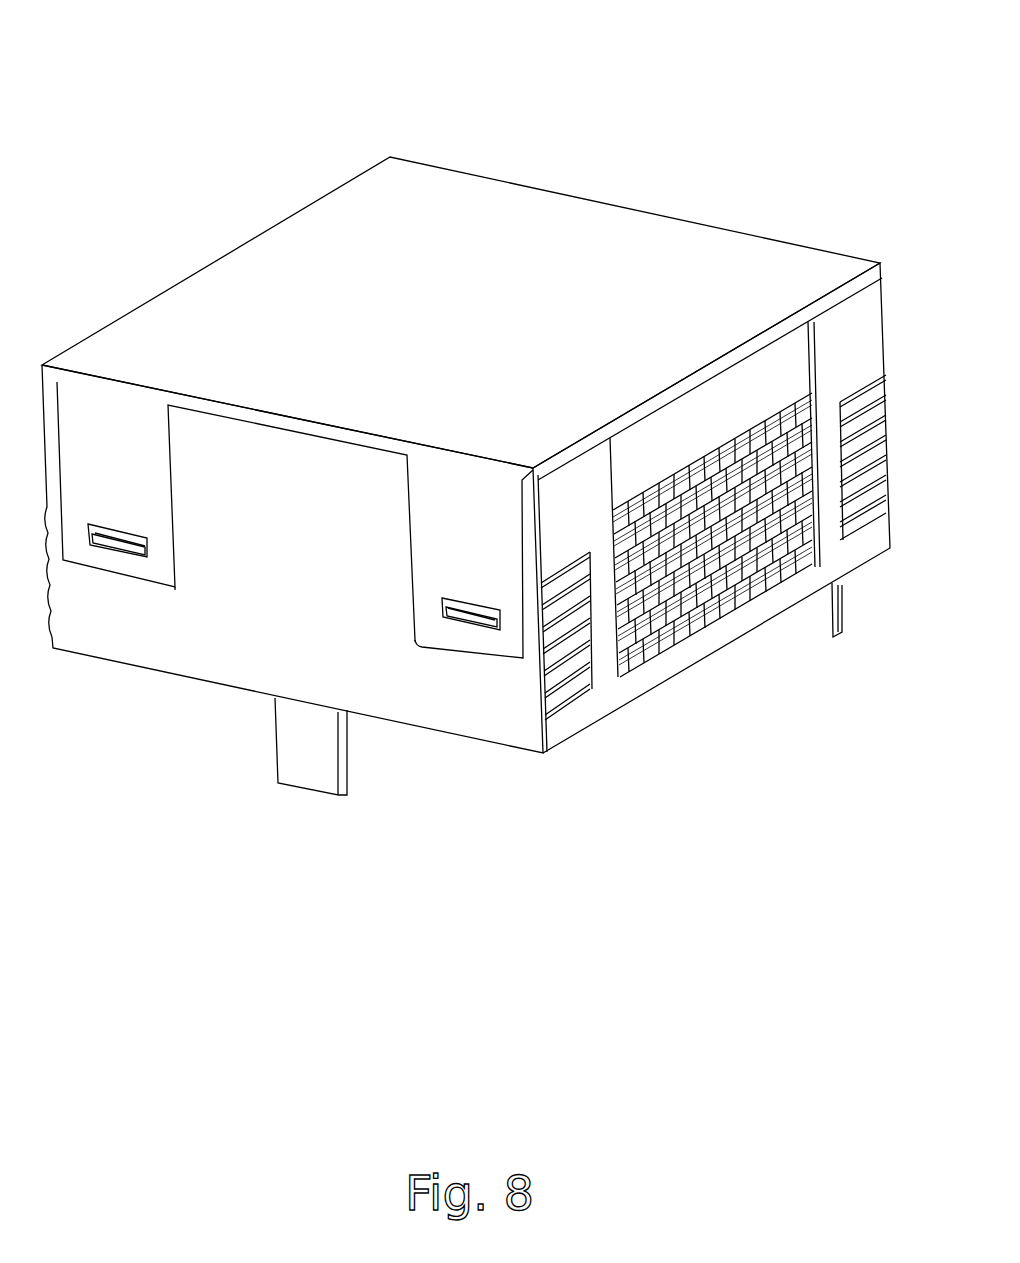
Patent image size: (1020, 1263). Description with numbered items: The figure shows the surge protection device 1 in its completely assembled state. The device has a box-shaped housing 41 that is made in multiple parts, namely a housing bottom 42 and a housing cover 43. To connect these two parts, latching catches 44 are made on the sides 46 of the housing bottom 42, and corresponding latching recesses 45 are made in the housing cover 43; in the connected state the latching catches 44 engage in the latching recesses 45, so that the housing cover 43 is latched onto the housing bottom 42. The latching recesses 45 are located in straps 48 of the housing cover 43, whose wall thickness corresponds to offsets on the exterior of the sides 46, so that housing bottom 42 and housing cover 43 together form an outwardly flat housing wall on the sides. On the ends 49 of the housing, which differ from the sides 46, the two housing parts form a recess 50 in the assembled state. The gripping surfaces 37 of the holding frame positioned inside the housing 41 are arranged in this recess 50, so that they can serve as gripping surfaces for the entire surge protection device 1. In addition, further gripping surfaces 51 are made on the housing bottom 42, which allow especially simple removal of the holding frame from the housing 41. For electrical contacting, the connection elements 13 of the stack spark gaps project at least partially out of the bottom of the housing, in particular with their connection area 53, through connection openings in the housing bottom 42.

The surge protection device 1 is at (113, 92).
The housing 41 is at (150, 280).
The housing bottom 42 is at (192, 672).
The housing cover 43 is at (607, 223).
The latching catches 44 is at (106, 550).
The latching recesses 45 is at (90, 547).
The sides 46 is at (253, 637).
The straps 48 is at (513, 633).
The ends 49 is at (702, 438).
The recess 50 is at (757, 445).
The gripping surfaces 51 is at (565, 657).
The gripping surfaces 37 is at (667, 597).
The connection elements 13 is at (318, 773).
The connection area 53 is at (318, 773).